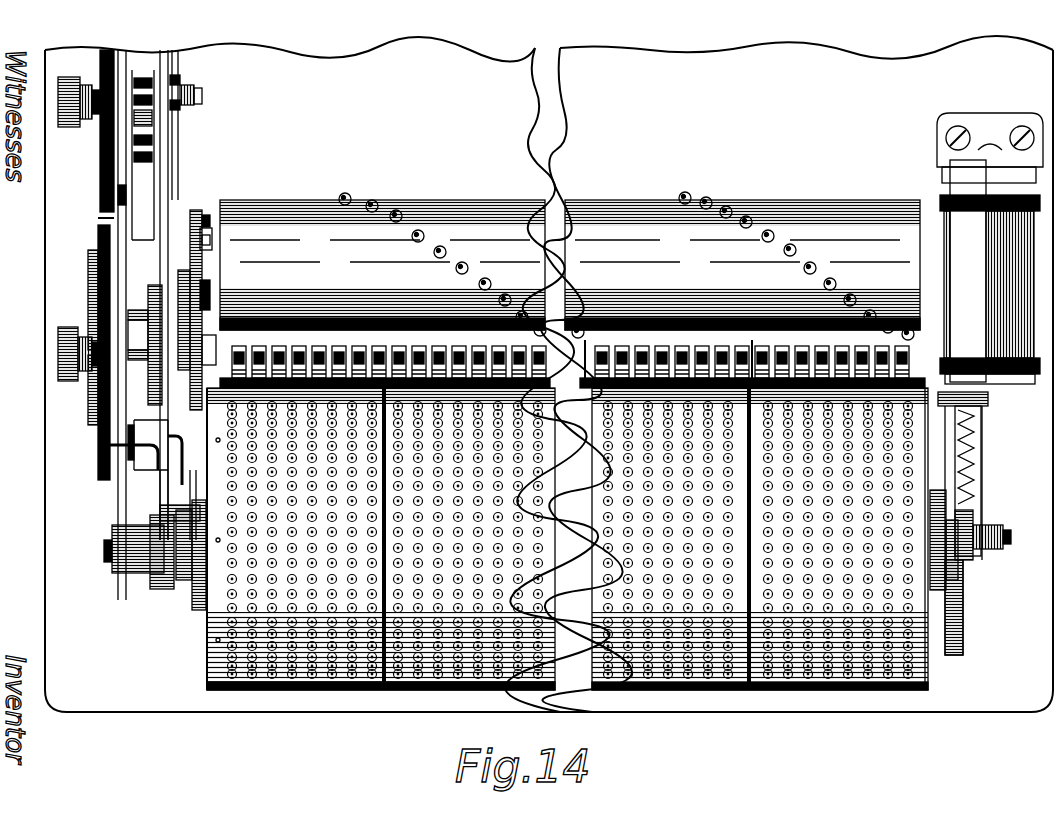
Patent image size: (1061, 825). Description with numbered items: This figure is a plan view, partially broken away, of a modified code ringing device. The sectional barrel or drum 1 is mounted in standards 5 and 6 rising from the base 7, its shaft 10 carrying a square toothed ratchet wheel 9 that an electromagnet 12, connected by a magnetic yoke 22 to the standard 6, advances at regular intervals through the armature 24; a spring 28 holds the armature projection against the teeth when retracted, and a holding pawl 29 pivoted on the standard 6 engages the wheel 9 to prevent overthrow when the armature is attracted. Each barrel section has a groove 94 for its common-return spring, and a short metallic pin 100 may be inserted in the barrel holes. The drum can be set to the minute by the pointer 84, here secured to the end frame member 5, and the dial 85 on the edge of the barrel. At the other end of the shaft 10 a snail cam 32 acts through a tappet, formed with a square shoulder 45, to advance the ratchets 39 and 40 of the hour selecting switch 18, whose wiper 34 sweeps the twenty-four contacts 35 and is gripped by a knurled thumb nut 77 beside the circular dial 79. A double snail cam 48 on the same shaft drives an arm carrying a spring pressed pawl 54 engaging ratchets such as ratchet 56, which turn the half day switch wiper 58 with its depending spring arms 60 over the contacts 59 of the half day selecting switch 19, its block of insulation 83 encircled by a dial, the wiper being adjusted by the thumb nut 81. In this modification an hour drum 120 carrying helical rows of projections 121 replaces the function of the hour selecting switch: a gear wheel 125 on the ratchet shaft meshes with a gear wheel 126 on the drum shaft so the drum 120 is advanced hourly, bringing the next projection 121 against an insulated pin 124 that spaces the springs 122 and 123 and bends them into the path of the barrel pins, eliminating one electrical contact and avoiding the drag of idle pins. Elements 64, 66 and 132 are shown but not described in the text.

The barrel or drum 1 is at (215, 655).
The standard 5 is at (112, 568).
The standard 6 is at (955, 165).
The base 7 is at (946, 700).
The square toothed ratchet wheel 9 is at (963, 632).
The shaft 10 is at (145, 575).
The electromagnet 12 is at (1025, 348).
The hour selecting switch 18 is at (67, 448).
The half day selecting switch 19 is at (100, 60).
The magnetic yoke 22 is at (942, 173).
The armature 24 is at (990, 400).
The spring 28 is at (975, 482).
The holding pawl 29 is at (950, 516).
The snail cam 32 is at (168, 592).
The wiper 34 is at (90, 300).
The stationary contacts 35 is at (96, 385).
The ratchet wheel 39 is at (166, 418).
The ratchet wheel 40 is at (214, 250).
The square shoulder 45 is at (175, 468).
The double snail cam 48 is at (152, 292).
The spring pressed pawl 54 is at (172, 76).
The ratchet 56 is at (195, 92).
The half day switch wiper 58 is at (72, 128).
The contacts 59 is at (118, 185).
The depending spring arms 60 is at (82, 125).
The screw 64 is at (200, 103).
The rod 66 is at (165, 152).
The knurled thumb nut 77 is at (58, 352).
The circular dial 79 is at (98, 238).
The knurled thumb nut 81 is at (60, 120).
The block of insulation 83 is at (116, 188).
The pointer 84 is at (190, 470).
The dial 85 is at (207, 690).
The groove 94 is at (355, 692).
The short metallic pin 100 is at (225, 402).
The hour drum 120 is at (498, 204).
The projections 121 is at (374, 205).
The spring 122 is at (588, 340).
The spring 123 is at (752, 345).
The insulated pins 124 is at (661, 345).
The gear wheel 125 is at (214, 300).
The gear wheel 126 is at (208, 212).
The drum section 132 is at (594, 578).